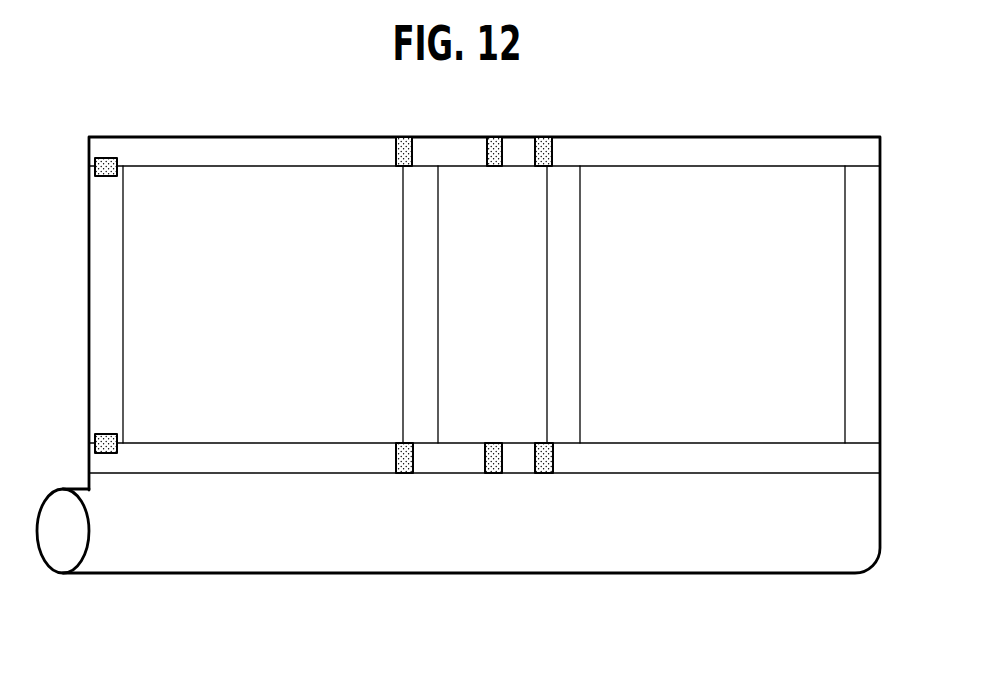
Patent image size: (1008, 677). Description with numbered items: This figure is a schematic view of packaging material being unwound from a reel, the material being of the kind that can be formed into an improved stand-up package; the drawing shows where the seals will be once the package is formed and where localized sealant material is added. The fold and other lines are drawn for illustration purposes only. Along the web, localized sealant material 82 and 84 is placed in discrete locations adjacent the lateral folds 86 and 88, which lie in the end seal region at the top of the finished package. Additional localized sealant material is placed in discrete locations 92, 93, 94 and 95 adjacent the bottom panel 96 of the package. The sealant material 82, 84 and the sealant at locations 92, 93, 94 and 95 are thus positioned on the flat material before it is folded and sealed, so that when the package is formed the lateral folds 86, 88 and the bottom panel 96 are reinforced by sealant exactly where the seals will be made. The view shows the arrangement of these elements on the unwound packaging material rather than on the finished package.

The localized sealant material 82 is at (108, 434).
The localized sealant material 84 is at (108, 157).
The lateral fold 86 is at (173, 443).
The lateral fold 88 is at (253, 165).
The discrete location of localized sealant material 92 is at (405, 473).
The discrete location of localized sealant material 93 is at (492, 473).
The discrete location of localized sealant material 94 is at (402, 136).
The discrete location of localized sealant material 95 is at (490, 136).
The bottom panel 96 is at (525, 190).